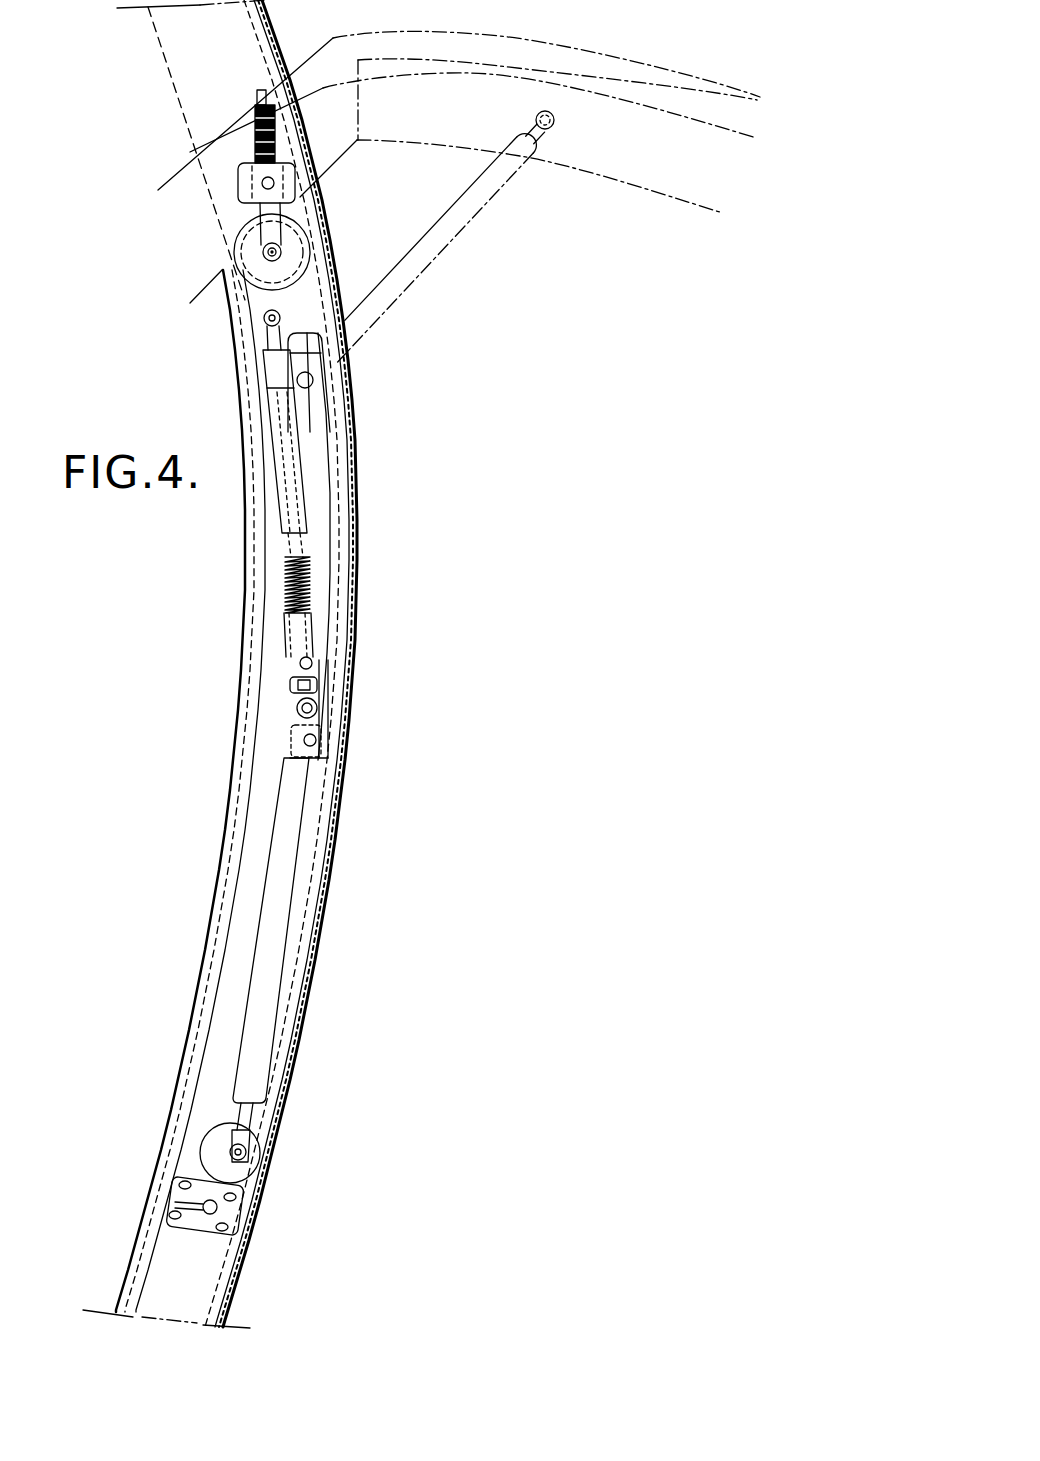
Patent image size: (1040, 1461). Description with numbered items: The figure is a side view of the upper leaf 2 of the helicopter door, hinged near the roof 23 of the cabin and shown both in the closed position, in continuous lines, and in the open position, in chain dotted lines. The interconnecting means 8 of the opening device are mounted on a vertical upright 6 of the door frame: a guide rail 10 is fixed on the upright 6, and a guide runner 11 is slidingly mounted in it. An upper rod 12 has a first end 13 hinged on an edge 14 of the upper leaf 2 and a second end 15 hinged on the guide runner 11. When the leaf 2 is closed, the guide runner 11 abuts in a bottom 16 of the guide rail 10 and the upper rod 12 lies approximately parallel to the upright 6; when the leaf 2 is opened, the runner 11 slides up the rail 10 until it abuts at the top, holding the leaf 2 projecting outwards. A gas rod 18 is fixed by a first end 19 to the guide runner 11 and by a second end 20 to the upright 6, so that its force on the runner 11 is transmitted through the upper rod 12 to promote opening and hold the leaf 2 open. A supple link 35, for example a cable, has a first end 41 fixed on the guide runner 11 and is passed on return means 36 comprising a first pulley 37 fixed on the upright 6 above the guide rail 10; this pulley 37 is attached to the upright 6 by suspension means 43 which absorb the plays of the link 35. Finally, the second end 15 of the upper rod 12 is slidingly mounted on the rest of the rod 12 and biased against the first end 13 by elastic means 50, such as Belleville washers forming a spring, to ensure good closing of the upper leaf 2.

The upper leaf 2 is at (676, 82).
The vertical upright 6 is at (262, 30).
The interconnecting means 8 is at (200, 643).
The guide rail 10 is at (330, 494).
The guide runner 11 is at (318, 413).
The upper rod 12 is at (410, 278).
The first end 13 is at (547, 130).
The edge 14 is at (683, 180).
The second end 15 is at (312, 378).
The bottom 16 is at (312, 755).
The gas rod 18 is at (273, 928).
The first end 19 is at (298, 720).
The second end 20 is at (245, 1140).
The roof 23 is at (147, 7).
The supple link 35 is at (250, 418).
The return means 36 is at (213, 230).
The first pulley 37 is at (248, 255).
The first end 41 is at (312, 620).
The suspension means 43 is at (258, 132).
The elastic means 50 is at (310, 588).